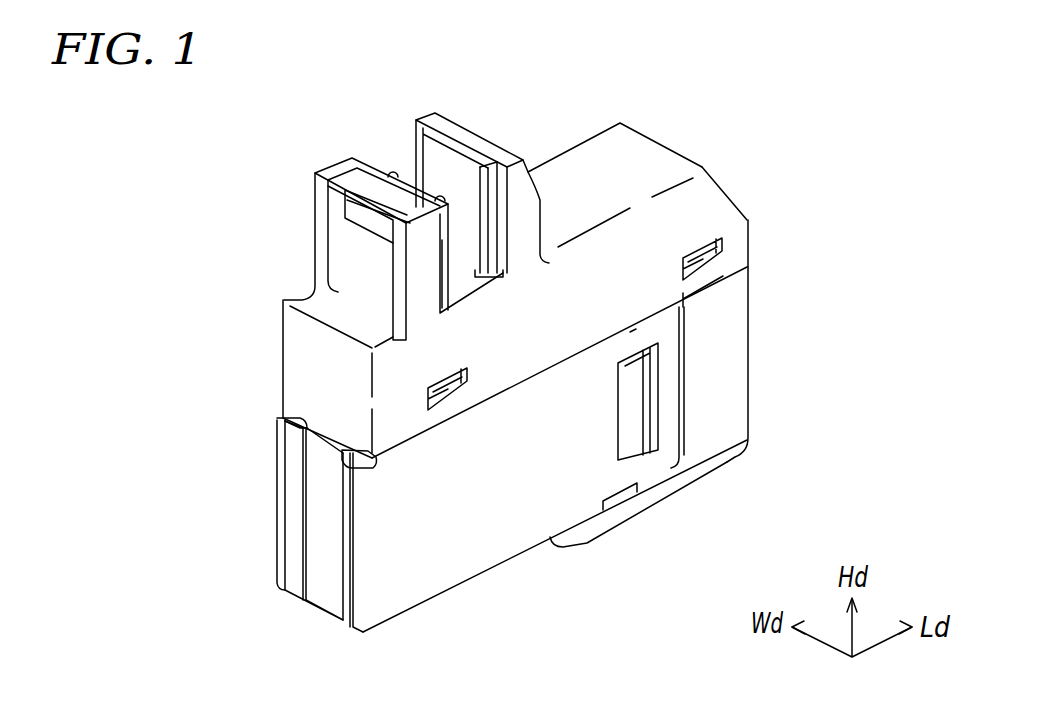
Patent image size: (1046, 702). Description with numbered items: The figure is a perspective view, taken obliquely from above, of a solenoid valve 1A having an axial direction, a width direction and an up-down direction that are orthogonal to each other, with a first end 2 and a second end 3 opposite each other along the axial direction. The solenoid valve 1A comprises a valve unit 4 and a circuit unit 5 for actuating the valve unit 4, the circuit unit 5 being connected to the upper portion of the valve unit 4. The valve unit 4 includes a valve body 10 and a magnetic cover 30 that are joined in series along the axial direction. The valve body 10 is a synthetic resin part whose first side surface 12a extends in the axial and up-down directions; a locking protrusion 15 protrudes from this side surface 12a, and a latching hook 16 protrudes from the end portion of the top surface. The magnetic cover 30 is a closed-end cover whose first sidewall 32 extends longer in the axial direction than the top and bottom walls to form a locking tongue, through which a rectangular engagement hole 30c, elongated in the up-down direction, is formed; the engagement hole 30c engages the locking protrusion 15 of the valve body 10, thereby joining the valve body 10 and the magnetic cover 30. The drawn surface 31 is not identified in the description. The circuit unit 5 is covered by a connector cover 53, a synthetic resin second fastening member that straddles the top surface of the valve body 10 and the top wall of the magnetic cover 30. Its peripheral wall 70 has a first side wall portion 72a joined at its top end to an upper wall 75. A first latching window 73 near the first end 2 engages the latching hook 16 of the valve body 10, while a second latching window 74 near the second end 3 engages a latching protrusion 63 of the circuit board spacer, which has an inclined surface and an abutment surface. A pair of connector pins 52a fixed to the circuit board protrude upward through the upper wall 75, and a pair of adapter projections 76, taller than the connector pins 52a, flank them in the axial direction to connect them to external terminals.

The solenoid valve 1A is at (870, 60).
The first end 2 is at (900, 344).
The second end 3 is at (170, 469).
The valve unit 4 is at (212, 553).
The circuit unit 5 is at (232, 270).
The valve body 10 is at (712, 443).
The first side surface 12a is at (720, 342).
The locking protrusion 15 is at (648, 420).
The latching hook 16 is at (697, 270).
The magnetic cover 30 is at (420, 608).
The engagement hole 30c is at (638, 472).
The side surface 31 is at (306, 517).
The first sidewall 32 is at (567, 472).
The connector pin 52a is at (441, 194).
The connector cover 53 is at (640, 134).
The latching protrusion 63 is at (440, 397).
The peripheral wall 70 is at (306, 379).
The first side wall portion 72a is at (618, 319).
The first latching window 73 is at (714, 254).
The second latching window 74 is at (470, 378).
The upper wall 75 is at (579, 166).
The adapter projection 76 is at (332, 168).